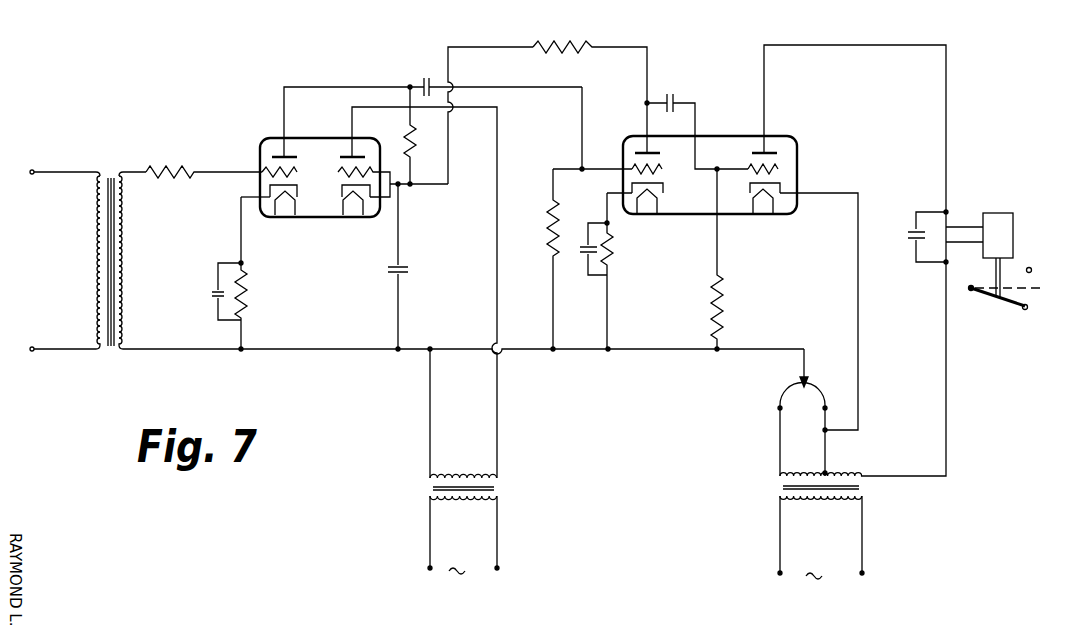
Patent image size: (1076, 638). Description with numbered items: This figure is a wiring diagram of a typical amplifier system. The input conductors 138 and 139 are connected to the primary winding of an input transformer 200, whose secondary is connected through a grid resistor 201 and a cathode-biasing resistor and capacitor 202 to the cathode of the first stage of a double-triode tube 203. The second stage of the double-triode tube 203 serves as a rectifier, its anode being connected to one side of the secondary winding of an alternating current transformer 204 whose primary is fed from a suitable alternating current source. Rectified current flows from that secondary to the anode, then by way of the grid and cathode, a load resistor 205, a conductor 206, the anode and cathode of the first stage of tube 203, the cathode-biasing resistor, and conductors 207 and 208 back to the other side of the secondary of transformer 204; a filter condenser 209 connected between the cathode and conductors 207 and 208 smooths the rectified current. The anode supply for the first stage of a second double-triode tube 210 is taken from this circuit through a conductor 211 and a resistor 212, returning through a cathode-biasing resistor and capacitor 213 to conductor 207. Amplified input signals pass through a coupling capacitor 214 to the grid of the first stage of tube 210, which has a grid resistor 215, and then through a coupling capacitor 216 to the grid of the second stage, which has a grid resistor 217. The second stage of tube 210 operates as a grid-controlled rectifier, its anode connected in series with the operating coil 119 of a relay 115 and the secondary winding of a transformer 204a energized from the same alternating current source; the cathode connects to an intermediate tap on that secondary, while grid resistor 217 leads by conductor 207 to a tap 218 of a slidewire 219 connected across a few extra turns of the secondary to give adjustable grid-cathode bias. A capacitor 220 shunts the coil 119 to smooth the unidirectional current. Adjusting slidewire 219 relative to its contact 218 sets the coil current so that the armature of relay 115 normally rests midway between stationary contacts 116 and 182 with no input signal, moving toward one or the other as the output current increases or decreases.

The input conductor 138 is at (37, 170).
The input conductor 139 is at (57, 355).
The input transformer 200 is at (110, 170).
The grid resistor 201 is at (161, 167).
The cathode-biasing resistor and capacitor 202 is at (249, 312).
The double-triode tube 203 is at (331, 218).
The alternating current transformer 204 is at (498, 487).
The transformer 204a is at (863, 485).
The load resistor 205 is at (405, 150).
The conductor 206 is at (326, 86).
The conductor 207 is at (345, 351).
The conductor 208 is at (429, 425).
The filter condenser 209 is at (413, 270).
The double-triode tube 210 is at (695, 215).
The conductor 211 is at (482, 45).
The resistor 212 is at (574, 45).
The cathode-biasing resistor and capacitor 213 is at (601, 268).
The coupling capacitor 214 is at (423, 76).
The grid resistor 215 is at (552, 228).
The coupling capacitor 216 is at (673, 91).
The grid resistor 217 is at (722, 318).
The tap 218 is at (802, 363).
The slidewire 219 is at (780, 398).
The capacitor 220 is at (901, 232).
The operating coil 119 is at (995, 212).
The relay 115 is at (994, 273).
The contact 116 is at (1024, 310).
The contact 182 is at (1031, 268).